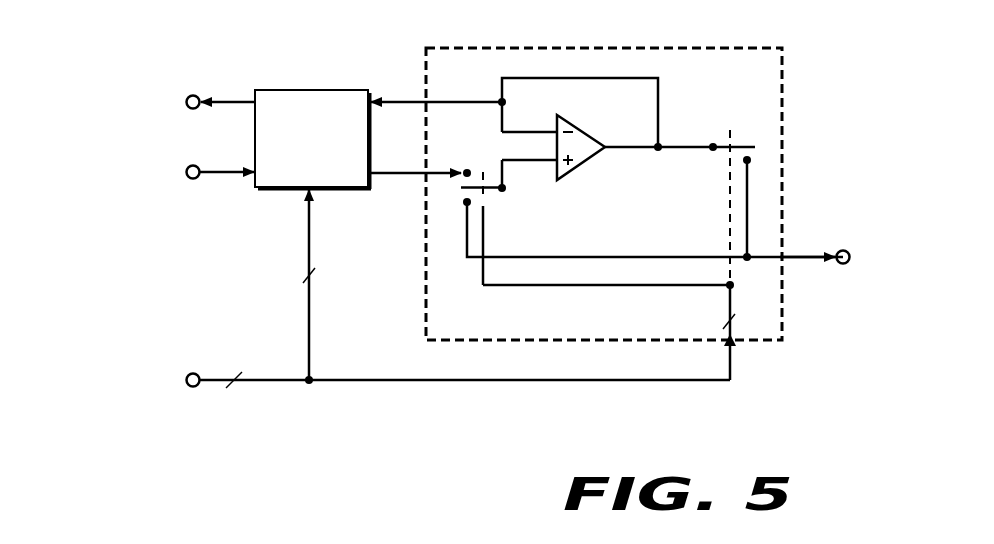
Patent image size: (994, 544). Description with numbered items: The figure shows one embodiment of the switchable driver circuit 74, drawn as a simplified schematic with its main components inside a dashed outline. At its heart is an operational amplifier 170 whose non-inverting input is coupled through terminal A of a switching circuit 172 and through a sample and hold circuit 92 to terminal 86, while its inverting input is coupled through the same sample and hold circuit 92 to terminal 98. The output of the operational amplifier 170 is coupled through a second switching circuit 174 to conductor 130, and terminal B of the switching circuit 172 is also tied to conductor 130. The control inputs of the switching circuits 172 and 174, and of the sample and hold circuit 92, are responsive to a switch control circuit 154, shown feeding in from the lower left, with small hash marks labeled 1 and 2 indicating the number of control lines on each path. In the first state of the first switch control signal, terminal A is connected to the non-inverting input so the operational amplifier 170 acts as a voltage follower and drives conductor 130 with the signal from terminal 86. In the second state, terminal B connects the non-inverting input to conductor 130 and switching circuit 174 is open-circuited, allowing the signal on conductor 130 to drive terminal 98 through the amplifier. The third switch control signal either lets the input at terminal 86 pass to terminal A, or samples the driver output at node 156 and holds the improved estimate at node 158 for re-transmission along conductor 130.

The sample and hold circuit 92 is at (295, 89).
The terminal 98 is at (186, 100).
The terminal 86 is at (186, 176).
The node 156 is at (403, 100).
The node 158 is at (402, 177).
The switchable driver circuit 74 is at (424, 312).
The operational amplifier 170 is at (584, 161).
The switching circuit 172 is at (510, 216).
The switching circuit 174 is at (730, 120).
The conductor 130 is at (845, 250).
The switch control circuit 154 is at (382, 318).
The single line bus width mark 1 is at (525, 291).
The two line bus width mark 2 is at (242, 372).